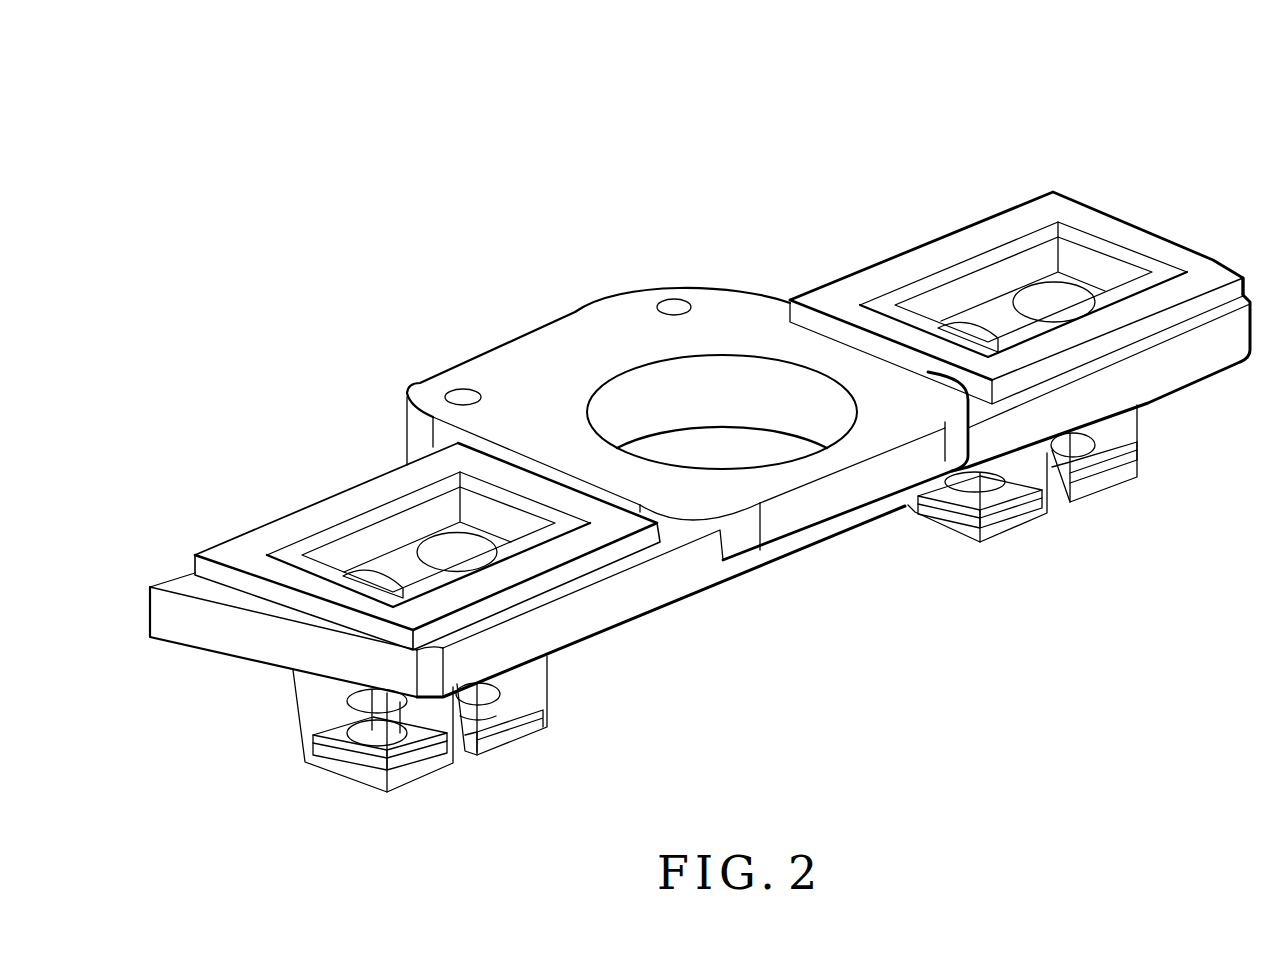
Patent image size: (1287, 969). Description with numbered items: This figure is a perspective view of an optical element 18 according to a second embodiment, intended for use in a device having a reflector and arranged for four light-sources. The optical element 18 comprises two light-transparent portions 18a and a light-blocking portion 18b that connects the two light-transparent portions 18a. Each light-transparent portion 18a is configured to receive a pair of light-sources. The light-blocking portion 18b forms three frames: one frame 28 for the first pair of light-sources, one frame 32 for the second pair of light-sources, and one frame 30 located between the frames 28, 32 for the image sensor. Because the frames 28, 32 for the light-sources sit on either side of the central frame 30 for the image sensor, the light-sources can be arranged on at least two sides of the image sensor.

The optical element 18 is at (1148, 147).
The light-transparent portion 18a is at (530, 680).
The light-blocking portion 18b is at (738, 317).
The frame 28 is at (362, 522).
The frame 30 is at (648, 372).
The frame 32 is at (970, 263).